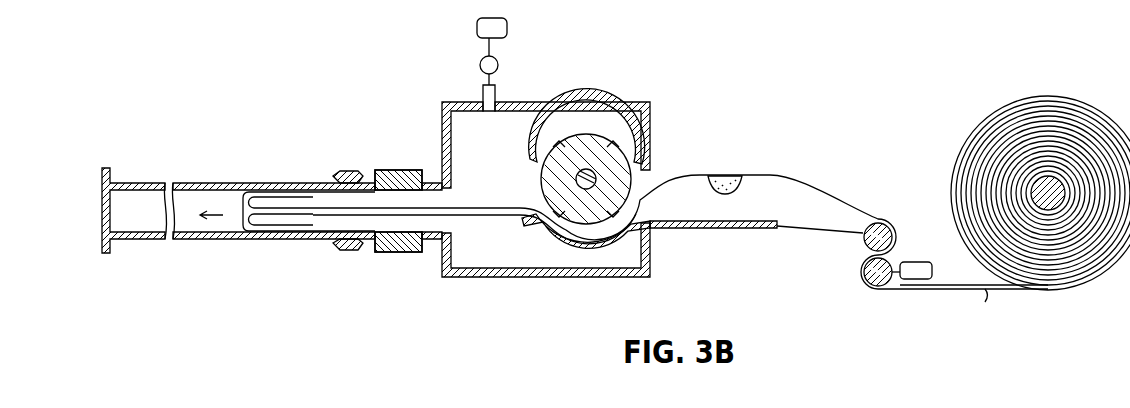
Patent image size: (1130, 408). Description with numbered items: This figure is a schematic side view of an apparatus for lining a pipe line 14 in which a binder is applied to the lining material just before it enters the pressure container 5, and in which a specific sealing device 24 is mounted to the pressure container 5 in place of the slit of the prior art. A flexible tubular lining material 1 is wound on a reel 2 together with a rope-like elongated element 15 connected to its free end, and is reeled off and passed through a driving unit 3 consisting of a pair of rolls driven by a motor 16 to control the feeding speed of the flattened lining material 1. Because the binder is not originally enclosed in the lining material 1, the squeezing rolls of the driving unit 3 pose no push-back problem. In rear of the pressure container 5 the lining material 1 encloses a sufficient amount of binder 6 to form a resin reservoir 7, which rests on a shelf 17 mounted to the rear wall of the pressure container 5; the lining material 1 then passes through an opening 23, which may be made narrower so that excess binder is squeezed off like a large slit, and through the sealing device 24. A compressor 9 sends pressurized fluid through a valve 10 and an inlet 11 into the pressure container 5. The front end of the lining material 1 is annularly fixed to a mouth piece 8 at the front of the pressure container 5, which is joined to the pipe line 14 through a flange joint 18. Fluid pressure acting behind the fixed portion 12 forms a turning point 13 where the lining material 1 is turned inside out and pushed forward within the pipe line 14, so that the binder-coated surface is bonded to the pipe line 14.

The flexible tubular lining material 1 is at (988, 302).
The reel 2 is at (1060, 178).
The driving unit 3 is at (898, 216).
The pressure container 5 is at (553, 103).
The binder 6 is at (730, 176).
The resin reservoir 7 is at (685, 187).
The mouth piece 8 is at (404, 160).
The compressor 9 is at (507, 30).
The valve 10 is at (498, 63).
The inlet 11 is at (497, 90).
The fixed portion 12 is at (398, 192).
The turning point 13 is at (250, 190).
The pipe line 14 is at (205, 183).
The rope-like elongated element 15 is at (1032, 158).
The motor 16 is at (913, 263).
The shelf 17 is at (711, 229).
The flange joint 18 is at (346, 254).
The opening 23 is at (625, 196).
The sealing device 24 is at (546, 150).